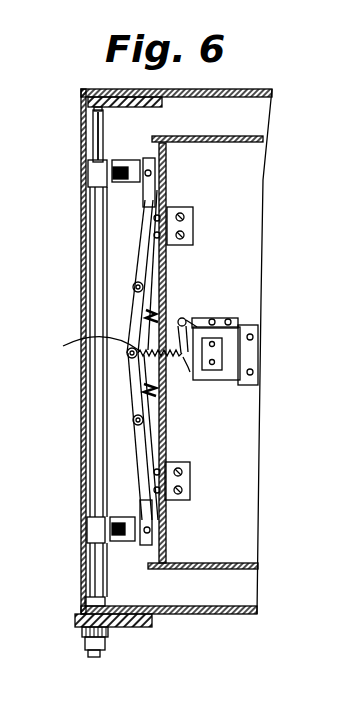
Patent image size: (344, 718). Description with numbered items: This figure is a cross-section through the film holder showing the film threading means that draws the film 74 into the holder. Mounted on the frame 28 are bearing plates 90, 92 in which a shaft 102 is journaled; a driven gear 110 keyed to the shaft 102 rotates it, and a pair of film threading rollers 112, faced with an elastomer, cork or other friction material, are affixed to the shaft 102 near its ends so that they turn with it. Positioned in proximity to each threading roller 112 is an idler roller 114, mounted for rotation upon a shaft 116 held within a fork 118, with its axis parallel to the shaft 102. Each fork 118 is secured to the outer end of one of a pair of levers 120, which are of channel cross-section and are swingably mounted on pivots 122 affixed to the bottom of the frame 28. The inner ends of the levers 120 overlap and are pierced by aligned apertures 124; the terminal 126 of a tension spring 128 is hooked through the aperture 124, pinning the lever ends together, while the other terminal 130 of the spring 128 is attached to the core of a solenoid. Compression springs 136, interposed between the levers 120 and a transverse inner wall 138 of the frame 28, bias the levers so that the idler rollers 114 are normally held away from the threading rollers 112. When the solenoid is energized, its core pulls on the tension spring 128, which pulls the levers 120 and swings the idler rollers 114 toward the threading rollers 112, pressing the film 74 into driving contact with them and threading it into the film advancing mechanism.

The frame 28 is at (204, 614).
The film 74 is at (110, 420).
The bearing plate 90 is at (77, 627).
The bearing plate 92 is at (163, 98).
The shaft 102 is at (96, 127).
The driven gear 110 is at (110, 633).
The film threading roller 112 is at (88, 172).
The idler roller 114 is at (133, 173).
The shaft 116 is at (122, 158).
The fork 118 is at (137, 158).
The lever 120 is at (147, 268).
The pivot 122 is at (142, 290).
The aperture 124 is at (130, 357).
The terminal 126 is at (122, 362).
The tension spring 128 is at (87, 349).
The terminal 130 is at (183, 357).
The compression spring 136 is at (168, 300).
The transverse inner wall 138 is at (170, 193).